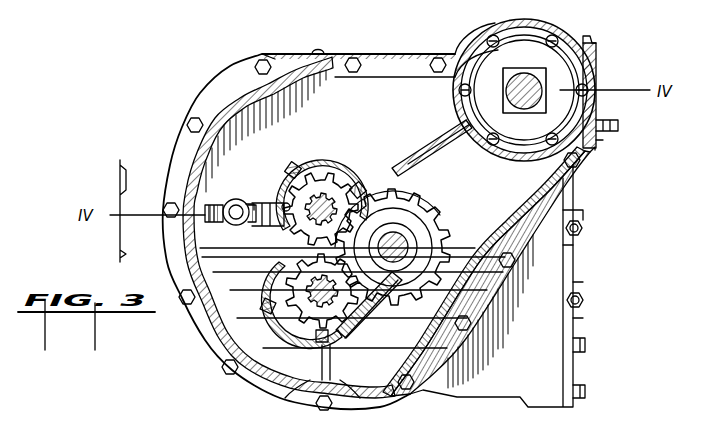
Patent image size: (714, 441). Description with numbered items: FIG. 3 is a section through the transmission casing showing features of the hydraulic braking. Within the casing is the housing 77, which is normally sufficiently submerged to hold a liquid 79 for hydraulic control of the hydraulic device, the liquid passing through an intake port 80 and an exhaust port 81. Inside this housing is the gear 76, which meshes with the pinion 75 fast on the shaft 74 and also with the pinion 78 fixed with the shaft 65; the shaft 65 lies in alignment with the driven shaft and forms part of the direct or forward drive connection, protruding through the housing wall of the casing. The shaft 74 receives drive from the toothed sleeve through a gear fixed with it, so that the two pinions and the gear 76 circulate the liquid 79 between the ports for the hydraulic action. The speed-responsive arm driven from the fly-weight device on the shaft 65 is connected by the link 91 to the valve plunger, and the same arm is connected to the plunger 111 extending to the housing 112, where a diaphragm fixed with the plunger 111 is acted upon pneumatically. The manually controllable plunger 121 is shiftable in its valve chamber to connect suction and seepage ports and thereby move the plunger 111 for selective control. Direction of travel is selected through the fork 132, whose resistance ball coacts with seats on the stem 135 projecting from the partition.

The shaft 65 is at (283, 214).
The shaft 74 is at (272, 297).
The pinion 75 is at (282, 314).
The gear 76 is at (448, 224).
The housing 77 is at (448, 196).
The pinion 78 is at (338, 174).
The liquid 79 is at (466, 256).
The intake port 80 is at (312, 350).
The exhaust port 81 is at (365, 335).
The link 91 is at (440, 142).
The plunger 111 is at (530, 66).
The housing 112 is at (522, 136).
The manually controllable plunger 121 is at (612, 133).
The fork 132 is at (280, 200).
The stem 135 is at (236, 199).